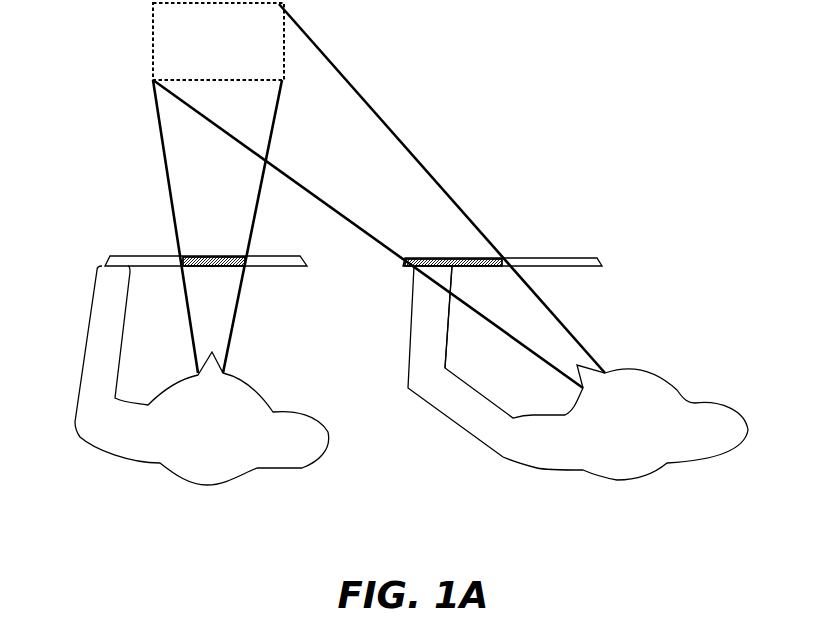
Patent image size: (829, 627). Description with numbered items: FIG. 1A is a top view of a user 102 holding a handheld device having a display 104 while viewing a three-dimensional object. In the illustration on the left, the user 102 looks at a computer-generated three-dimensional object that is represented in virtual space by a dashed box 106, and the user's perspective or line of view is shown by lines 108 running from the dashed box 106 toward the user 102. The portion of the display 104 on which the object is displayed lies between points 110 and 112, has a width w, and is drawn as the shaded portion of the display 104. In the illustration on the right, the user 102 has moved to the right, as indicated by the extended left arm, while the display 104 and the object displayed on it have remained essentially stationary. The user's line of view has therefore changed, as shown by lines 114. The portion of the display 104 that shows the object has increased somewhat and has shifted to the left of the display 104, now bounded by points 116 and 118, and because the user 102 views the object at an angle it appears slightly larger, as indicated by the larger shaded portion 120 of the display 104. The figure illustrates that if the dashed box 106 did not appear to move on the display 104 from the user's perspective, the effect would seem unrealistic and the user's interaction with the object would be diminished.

The user 102 is at (218, 462).
The display 104 is at (118, 257).
The dashed box 106 is at (203, 52).
The lines 108 is at (257, 193).
The point 110 is at (181, 256).
The point 112 is at (247, 256).
The lines 114 is at (513, 340).
The point 116 is at (414, 257).
The point 118 is at (498, 255).
The larger shaded portion 120 is at (453, 262).